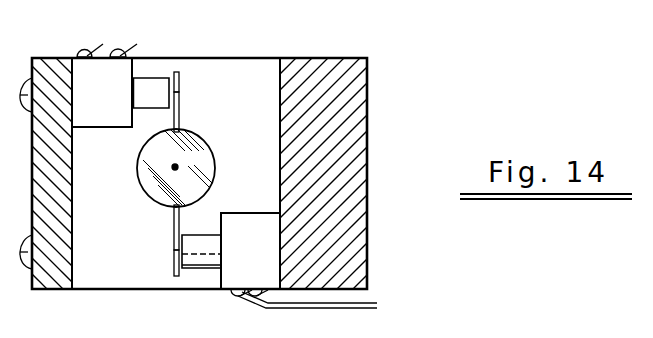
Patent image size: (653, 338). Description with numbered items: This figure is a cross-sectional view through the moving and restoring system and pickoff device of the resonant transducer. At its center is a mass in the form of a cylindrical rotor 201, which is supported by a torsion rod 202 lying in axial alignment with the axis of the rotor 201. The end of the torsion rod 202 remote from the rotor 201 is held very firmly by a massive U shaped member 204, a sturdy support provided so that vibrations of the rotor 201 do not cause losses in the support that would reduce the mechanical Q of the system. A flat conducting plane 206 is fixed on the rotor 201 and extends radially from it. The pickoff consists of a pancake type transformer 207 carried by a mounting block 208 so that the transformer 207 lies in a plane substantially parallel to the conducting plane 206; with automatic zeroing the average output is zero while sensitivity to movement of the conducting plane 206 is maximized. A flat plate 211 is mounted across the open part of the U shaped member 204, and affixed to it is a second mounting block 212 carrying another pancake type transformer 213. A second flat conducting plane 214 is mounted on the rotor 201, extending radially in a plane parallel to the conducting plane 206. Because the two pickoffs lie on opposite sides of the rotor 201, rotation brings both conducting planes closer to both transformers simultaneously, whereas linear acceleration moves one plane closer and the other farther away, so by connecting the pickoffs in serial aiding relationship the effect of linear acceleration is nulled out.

The cylindrical rotor 201 is at (152, 180).
The torsion rod 202 is at (178, 166).
The U shaped member 204 is at (355, 142).
The flat conducting plane 206 is at (174, 257).
The pancake type transformer 207 is at (182, 268).
The mounting block 208 is at (209, 254).
The flat plate 211 is at (58, 252).
The mounting block 212 is at (148, 100).
The pancake type transformer 213 is at (170, 68).
The flat conducting plane 214 is at (180, 88).